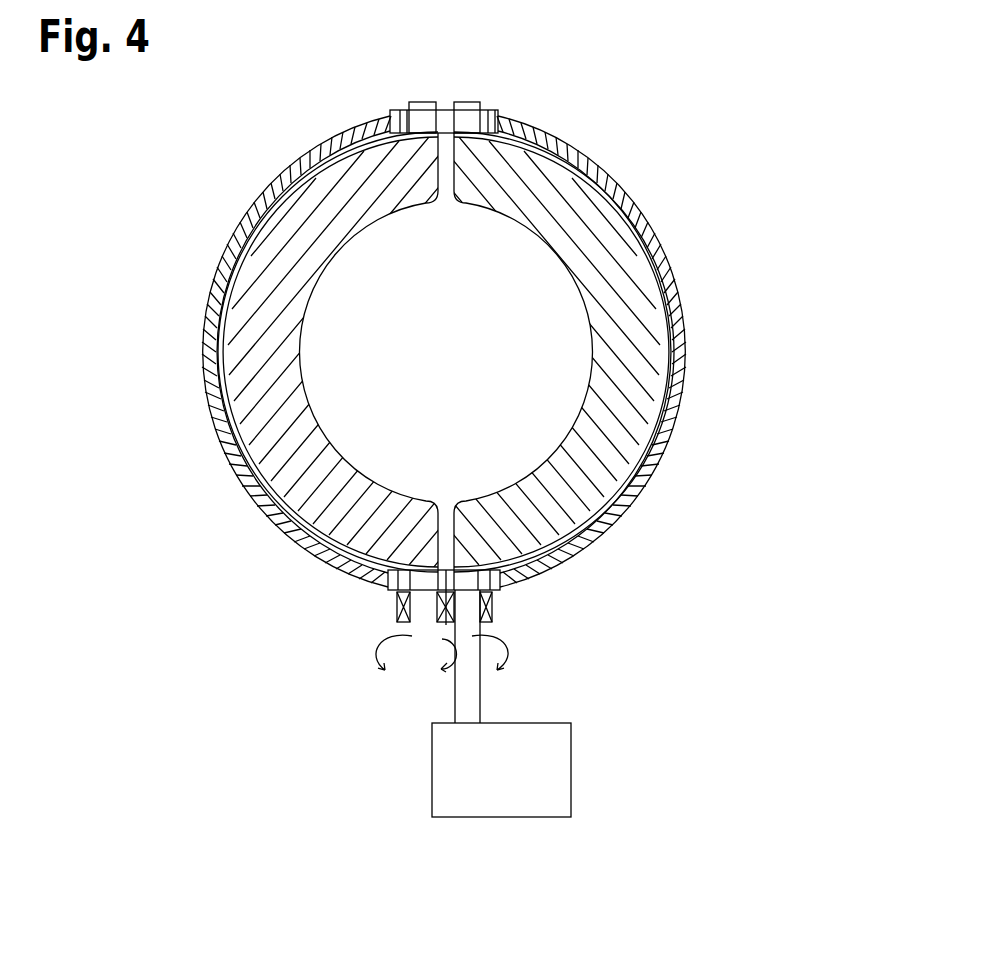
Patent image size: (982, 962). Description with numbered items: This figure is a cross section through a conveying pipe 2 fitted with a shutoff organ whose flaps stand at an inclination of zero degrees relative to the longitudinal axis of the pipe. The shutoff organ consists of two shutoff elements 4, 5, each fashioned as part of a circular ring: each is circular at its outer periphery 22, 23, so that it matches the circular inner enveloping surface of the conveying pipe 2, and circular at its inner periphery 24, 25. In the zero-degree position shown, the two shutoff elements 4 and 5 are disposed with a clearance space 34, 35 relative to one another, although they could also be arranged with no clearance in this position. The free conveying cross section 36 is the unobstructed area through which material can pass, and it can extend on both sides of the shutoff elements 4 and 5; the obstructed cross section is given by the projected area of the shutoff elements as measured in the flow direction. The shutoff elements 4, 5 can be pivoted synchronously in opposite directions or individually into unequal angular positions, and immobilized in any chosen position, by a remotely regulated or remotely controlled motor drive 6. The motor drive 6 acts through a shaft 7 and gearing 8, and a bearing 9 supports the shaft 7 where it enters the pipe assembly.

The conveying pipe 2 is at (443, 344).
The shutoff element 4 is at (388, 352).
The shutoff element 5 is at (498, 352).
The motor drive 6 is at (445, 772).
The shaft 7 is at (470, 700).
The gearing 8 is at (400, 613).
The bearing 9 is at (487, 585).
The outer periphery 22 is at (247, 252).
The outer periphery 23 is at (646, 432).
The inner periphery 24 is at (303, 402).
The inner periphery 25 is at (592, 330).
The clearance space 34 is at (447, 168).
The clearance space 35 is at (446, 532).
The free conveying cross section 36 is at (615, 513).